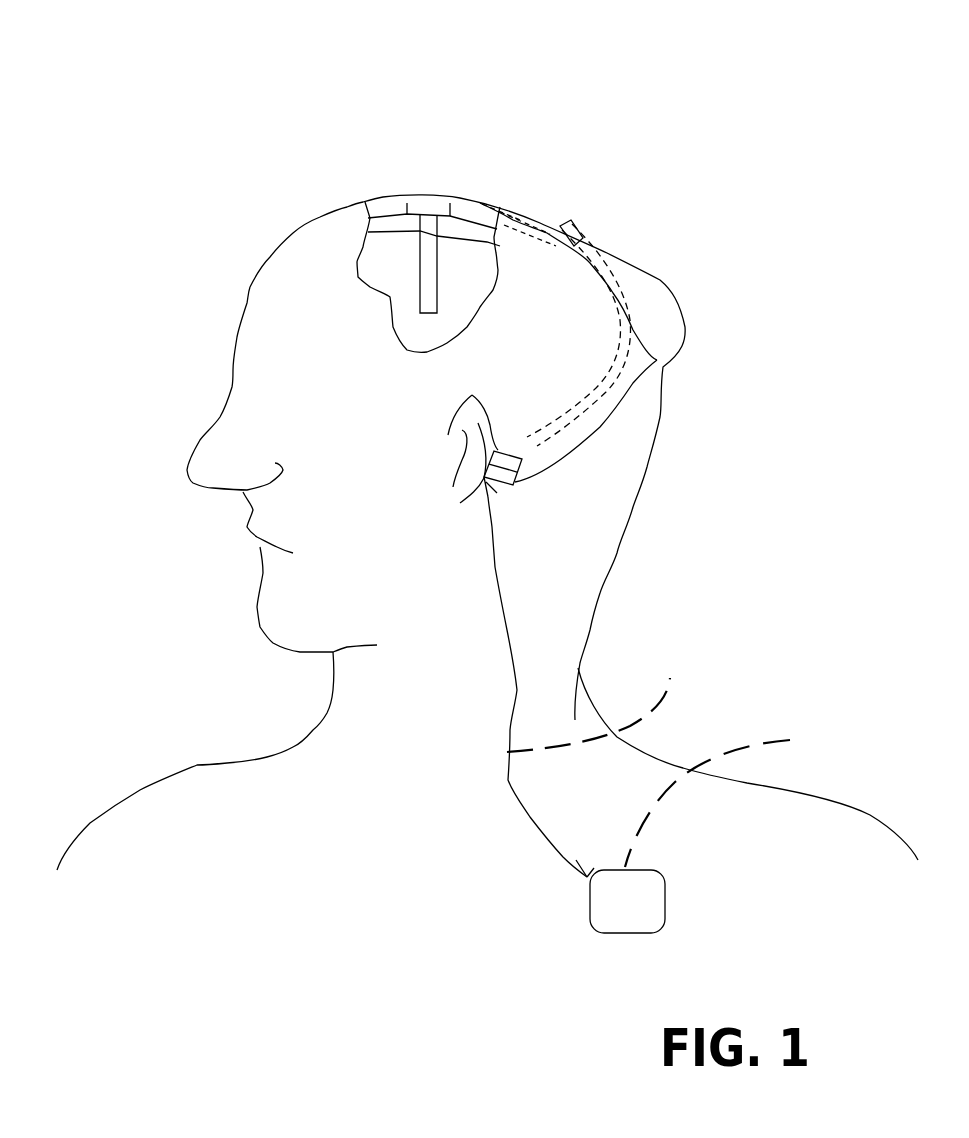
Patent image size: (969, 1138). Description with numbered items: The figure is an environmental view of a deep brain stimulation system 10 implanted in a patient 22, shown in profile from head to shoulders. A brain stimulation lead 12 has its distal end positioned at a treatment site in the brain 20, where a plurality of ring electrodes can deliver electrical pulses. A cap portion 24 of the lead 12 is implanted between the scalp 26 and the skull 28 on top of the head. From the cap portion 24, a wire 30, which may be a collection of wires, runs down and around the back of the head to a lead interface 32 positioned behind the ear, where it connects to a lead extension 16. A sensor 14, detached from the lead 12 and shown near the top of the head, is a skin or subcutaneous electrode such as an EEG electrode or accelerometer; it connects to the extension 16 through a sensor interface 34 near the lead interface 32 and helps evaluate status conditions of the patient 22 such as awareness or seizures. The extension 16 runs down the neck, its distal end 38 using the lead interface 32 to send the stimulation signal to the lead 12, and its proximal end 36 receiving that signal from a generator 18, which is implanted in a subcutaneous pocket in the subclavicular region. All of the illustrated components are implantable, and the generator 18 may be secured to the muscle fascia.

The deep brain stimulation (DBS) system 10 is at (440, 36).
The brain stimulation lead 12 is at (420, 262).
The sensor 14 is at (584, 240).
The lead extension 16 is at (596, 692).
The generator 18 is at (725, 798).
The brain 20 is at (403, 304).
The patient 22 is at (197, 757).
The cap portion 24 is at (425, 203).
The scalp 26 is at (393, 195).
The skull 28 is at (378, 217).
The wire 30 is at (620, 355).
The lead interface 32 is at (503, 451).
The sensor interface 34 is at (507, 486).
The proximal end 36 is at (536, 888).
The distal end 38 is at (473, 532).